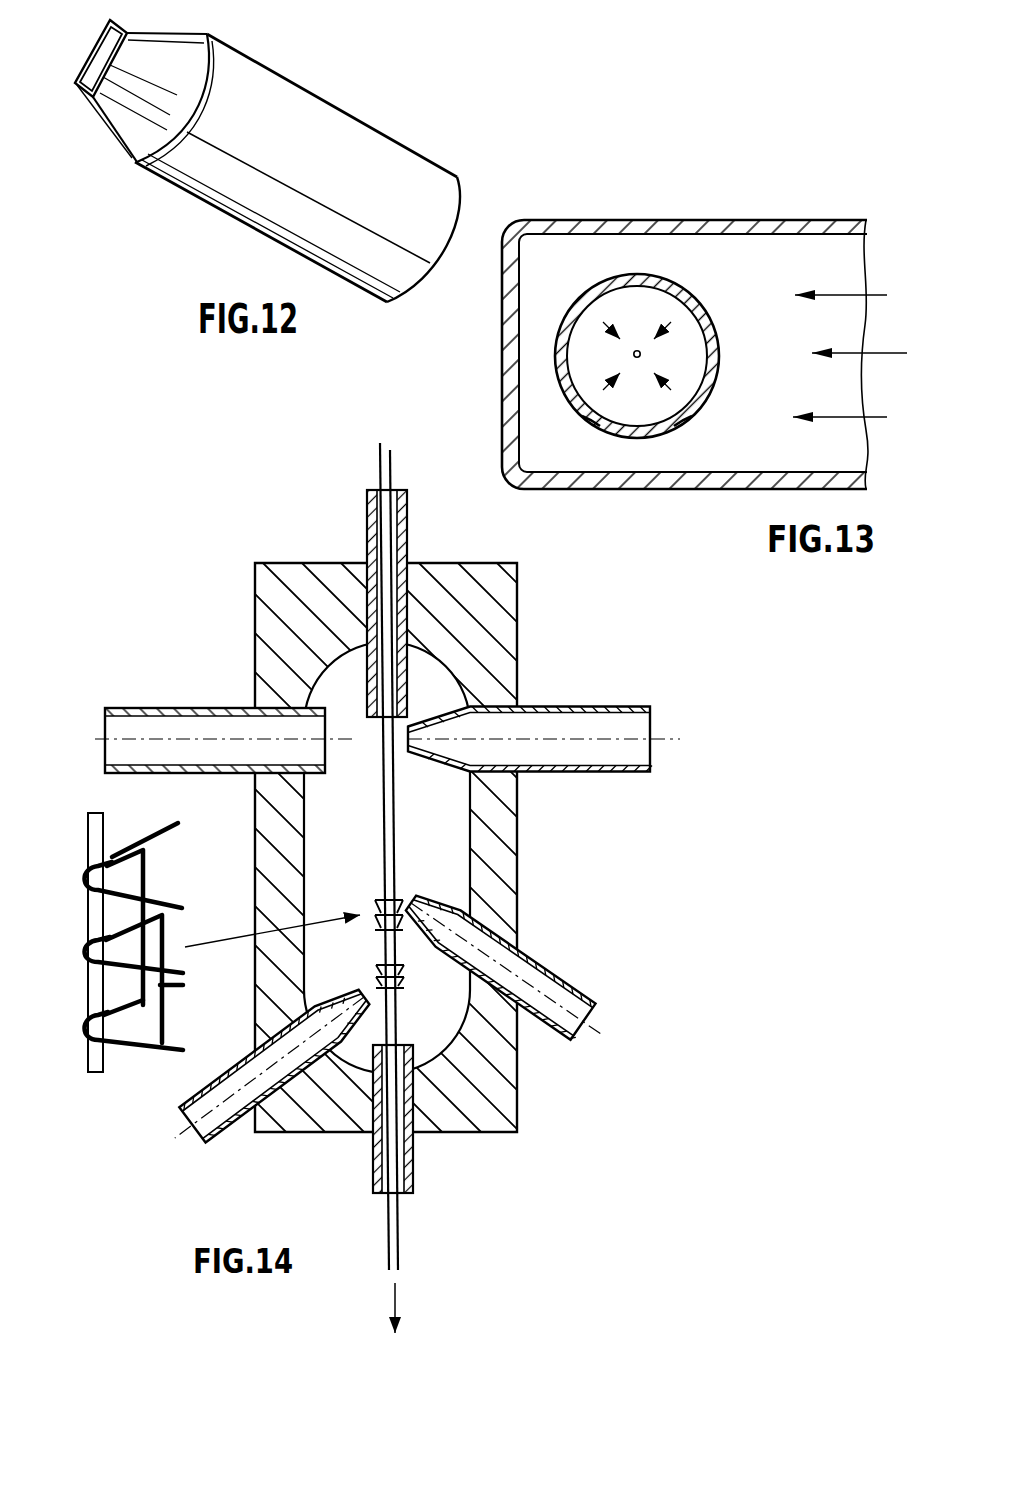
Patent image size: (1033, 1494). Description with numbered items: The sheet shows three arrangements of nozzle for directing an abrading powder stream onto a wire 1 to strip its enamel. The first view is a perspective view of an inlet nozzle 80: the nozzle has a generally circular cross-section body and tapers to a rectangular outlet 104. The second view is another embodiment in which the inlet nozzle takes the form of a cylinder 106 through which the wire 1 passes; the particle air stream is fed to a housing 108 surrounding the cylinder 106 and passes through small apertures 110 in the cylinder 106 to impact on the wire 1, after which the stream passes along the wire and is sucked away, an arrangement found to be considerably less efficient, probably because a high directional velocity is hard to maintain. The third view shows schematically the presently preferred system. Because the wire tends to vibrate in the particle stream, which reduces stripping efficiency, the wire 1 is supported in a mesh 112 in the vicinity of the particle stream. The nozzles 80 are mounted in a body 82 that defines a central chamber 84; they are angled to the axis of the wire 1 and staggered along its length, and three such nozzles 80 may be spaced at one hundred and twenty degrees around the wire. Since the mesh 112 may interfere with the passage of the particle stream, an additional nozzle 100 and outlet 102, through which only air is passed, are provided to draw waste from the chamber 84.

In FIG. 13, the wire 1 is at (637, 351).
In FIG. 14, the wire 1 is at (391, 466).
In FIG. 12, the inlet nozzle 80 is at (415, 146).
In FIG. 14, the inlet nozzle 80 is at (571, 984).
In FIG. 14, the body 82 is at (516, 847).
In FIG. 14, the central chamber 84 is at (458, 848).
In FIG. 14, the nozzle inlet 100 is at (627, 706).
In FIG. 14, the outlet 102 is at (175, 706).
In FIG. 12, the rectangular outlet 104 is at (75, 82).
In FIG. 13, the cylinder 106 is at (647, 277).
In FIG. 13, the housing 108 is at (760, 223).
In FIG. 13, the small apertures 110 is at (584, 413).
In FIG. 14, the mesh 112 is at (382, 900).